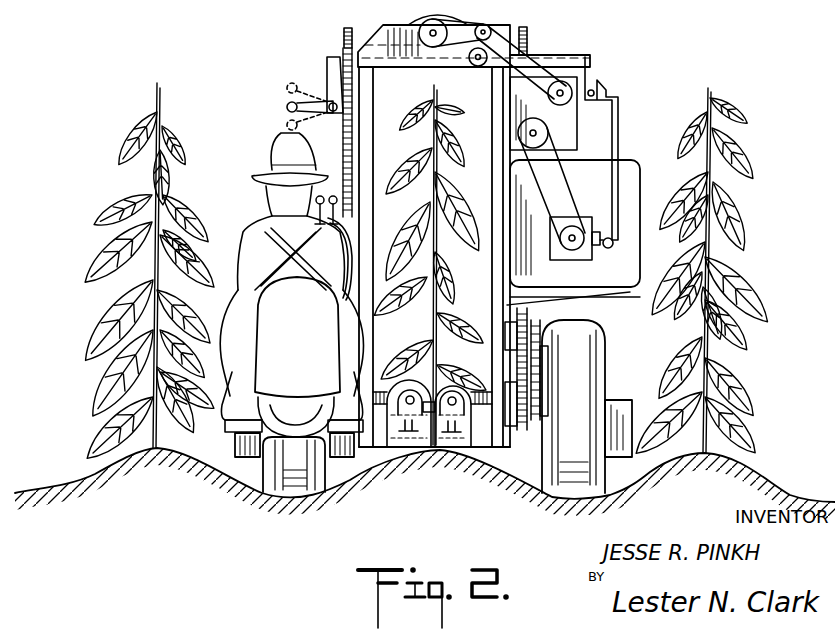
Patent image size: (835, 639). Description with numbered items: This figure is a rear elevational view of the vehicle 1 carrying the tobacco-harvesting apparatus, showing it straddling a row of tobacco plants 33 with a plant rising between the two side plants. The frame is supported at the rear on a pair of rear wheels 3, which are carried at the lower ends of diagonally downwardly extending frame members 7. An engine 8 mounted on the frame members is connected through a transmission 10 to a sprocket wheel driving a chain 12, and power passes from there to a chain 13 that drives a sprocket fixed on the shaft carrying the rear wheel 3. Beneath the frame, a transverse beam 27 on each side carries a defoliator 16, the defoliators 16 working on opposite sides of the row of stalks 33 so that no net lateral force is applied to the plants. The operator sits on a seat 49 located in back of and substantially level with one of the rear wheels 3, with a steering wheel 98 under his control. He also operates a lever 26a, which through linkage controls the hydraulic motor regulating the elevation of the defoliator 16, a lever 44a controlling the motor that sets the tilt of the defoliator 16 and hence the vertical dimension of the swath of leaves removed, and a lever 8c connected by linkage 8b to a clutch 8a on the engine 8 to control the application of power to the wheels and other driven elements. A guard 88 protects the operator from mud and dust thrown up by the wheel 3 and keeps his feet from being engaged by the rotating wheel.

The vehicle 1 is at (625, 55).
The rear wheels 3 is at (575, 352).
The frame members 7 is at (364, 92).
The engine 8 is at (592, 194).
The clutch 8a is at (585, 260).
The linkage 8b is at (620, 128).
The lever 8c is at (290, 107).
The transmission 10 is at (560, 118).
The chain 12 is at (346, 34).
The chain 13 is at (540, 352).
The defoliator 16 is at (410, 378).
The lever 26a is at (322, 199).
The transverse beam 27 is at (410, 447).
The tobacco plants 33 is at (437, 236).
The lever 44a is at (334, 200).
The seat 49 is at (300, 344).
The guard 88 is at (292, 410).
The steering wheel 98 is at (348, 252).